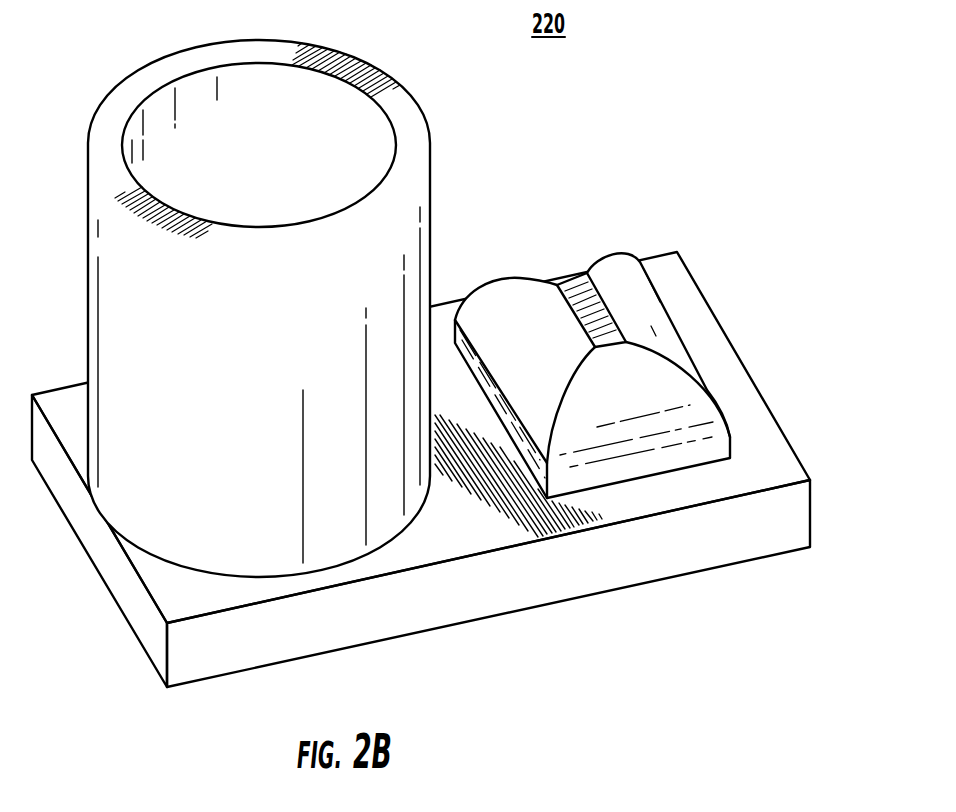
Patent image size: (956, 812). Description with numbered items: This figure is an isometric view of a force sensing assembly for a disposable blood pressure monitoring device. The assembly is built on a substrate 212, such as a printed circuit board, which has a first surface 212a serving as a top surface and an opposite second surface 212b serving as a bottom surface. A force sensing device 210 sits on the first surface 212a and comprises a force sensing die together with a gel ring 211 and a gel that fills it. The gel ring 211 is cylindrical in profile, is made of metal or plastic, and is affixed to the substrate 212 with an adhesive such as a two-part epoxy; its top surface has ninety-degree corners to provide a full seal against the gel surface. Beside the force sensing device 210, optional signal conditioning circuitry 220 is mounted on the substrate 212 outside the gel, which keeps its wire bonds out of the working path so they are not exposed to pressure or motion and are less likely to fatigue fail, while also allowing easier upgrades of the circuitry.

The force sensing device 210 is at (296, 301).
The gel ring 211 is at (430, 237).
The substrate 212 is at (435, 494).
The first surface 212a is at (185, 590).
The second surface 212b is at (228, 677).
The signal conditioning circuitry 220 is at (630, 313).